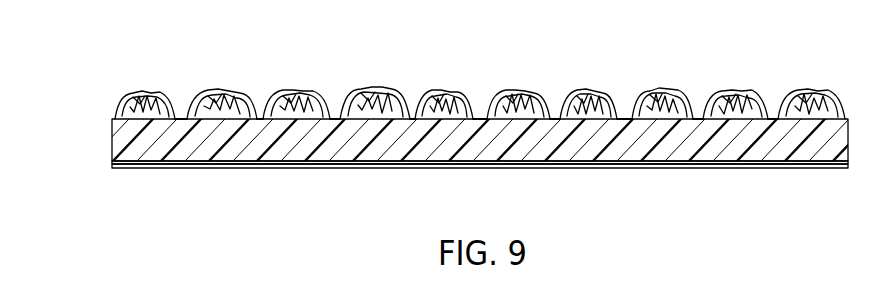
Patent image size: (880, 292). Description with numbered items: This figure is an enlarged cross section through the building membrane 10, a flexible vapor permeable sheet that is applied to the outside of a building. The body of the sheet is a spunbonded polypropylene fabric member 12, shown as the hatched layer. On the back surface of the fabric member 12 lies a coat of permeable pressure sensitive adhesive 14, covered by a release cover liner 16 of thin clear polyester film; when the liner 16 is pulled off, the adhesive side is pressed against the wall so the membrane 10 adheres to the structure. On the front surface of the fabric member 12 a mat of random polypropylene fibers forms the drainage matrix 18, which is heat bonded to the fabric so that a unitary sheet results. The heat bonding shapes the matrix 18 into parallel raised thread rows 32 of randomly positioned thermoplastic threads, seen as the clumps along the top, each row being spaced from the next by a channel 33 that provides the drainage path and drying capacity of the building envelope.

The building membrane 10 is at (298, 203).
The spunbonded polypropylene fabric member 12 is at (118, 138).
The permeable pressure sensitive adhesive 14 is at (823, 162).
The release cover liner 16 is at (722, 165).
The drainage matrix 18 is at (444, 57).
The thread rows 32 is at (212, 90).
The channels 33 is at (257, 117).